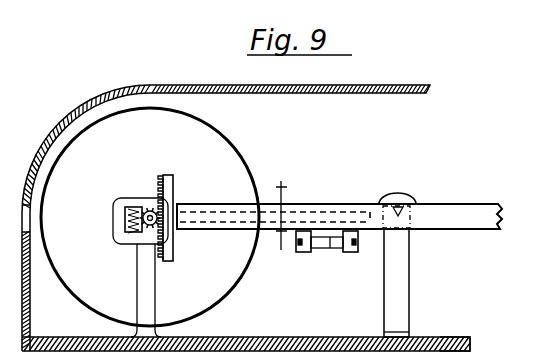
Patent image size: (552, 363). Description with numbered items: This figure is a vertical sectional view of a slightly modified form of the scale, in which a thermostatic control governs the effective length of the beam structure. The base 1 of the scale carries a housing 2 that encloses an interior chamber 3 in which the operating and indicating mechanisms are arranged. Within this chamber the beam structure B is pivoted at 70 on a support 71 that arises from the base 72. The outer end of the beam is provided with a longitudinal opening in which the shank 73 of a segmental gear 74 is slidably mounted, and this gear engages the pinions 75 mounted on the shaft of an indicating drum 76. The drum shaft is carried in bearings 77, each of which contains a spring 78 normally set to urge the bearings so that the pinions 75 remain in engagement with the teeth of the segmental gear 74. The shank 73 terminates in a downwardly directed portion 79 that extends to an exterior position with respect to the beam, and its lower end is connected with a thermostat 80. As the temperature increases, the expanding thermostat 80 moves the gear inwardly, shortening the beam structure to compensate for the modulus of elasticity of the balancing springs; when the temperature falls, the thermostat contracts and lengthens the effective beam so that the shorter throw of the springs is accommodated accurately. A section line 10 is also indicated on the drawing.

The base 1 is at (476, 316).
The housing 2 is at (296, 95).
The interior chamber 3 is at (338, 141).
The section line 10 is at (280, 215).
The pivot 70 is at (399, 207).
The support 71 is at (407, 245).
The base 72 is at (326, 333).
The shank 73 is at (199, 214).
The segmental gear 74 is at (173, 248).
The pinions 75 is at (146, 229).
The indicating drum 76 is at (150, 217).
The bearings 77 is at (138, 208).
The spring 78 is at (125, 219).
The downwardly directed portion 79 is at (353, 252).
The thermostat 80 is at (323, 252).
The beam structure B is at (456, 207).